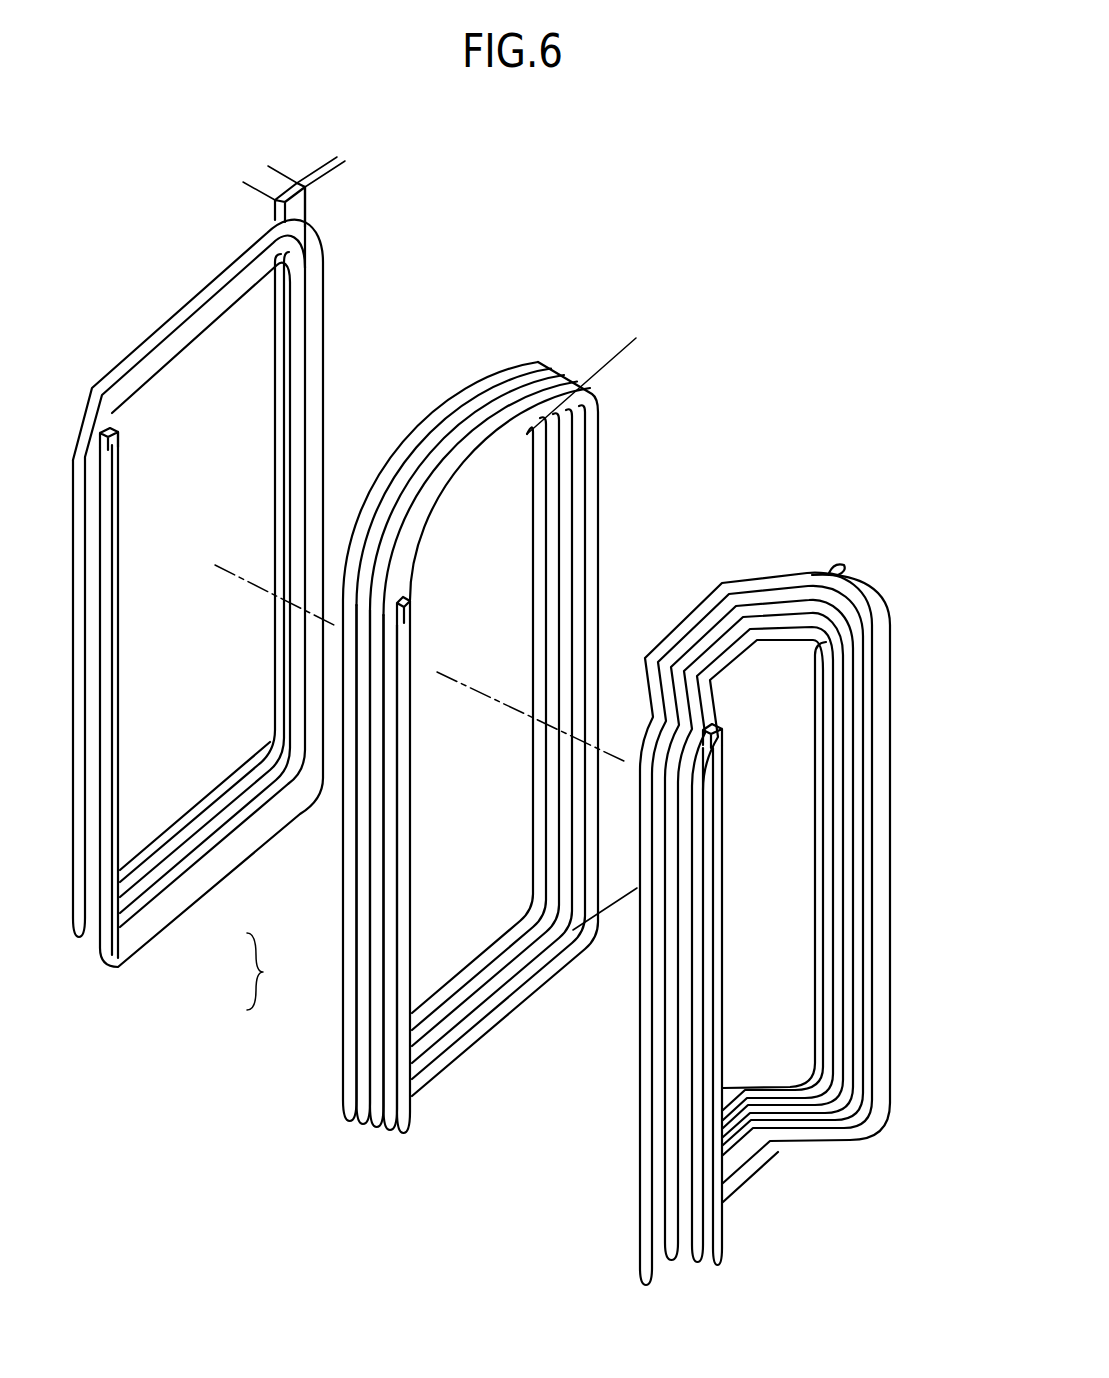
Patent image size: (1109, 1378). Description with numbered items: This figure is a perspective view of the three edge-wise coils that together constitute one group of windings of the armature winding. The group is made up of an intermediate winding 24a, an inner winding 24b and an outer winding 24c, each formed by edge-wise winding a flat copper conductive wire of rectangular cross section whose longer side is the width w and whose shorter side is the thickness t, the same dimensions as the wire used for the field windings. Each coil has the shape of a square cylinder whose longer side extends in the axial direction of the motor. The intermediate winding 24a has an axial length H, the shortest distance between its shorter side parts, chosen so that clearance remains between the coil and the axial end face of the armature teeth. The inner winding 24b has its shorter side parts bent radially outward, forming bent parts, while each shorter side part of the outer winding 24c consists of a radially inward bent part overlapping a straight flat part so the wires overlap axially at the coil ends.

The intermediate winding 24a is at (514, 721).
The inner winding 24b is at (811, 893).
The outer winding 24c is at (215, 573).
The width w is at (259, 168).
The thickness t is at (322, 152).
The axial length H is at (630, 511).